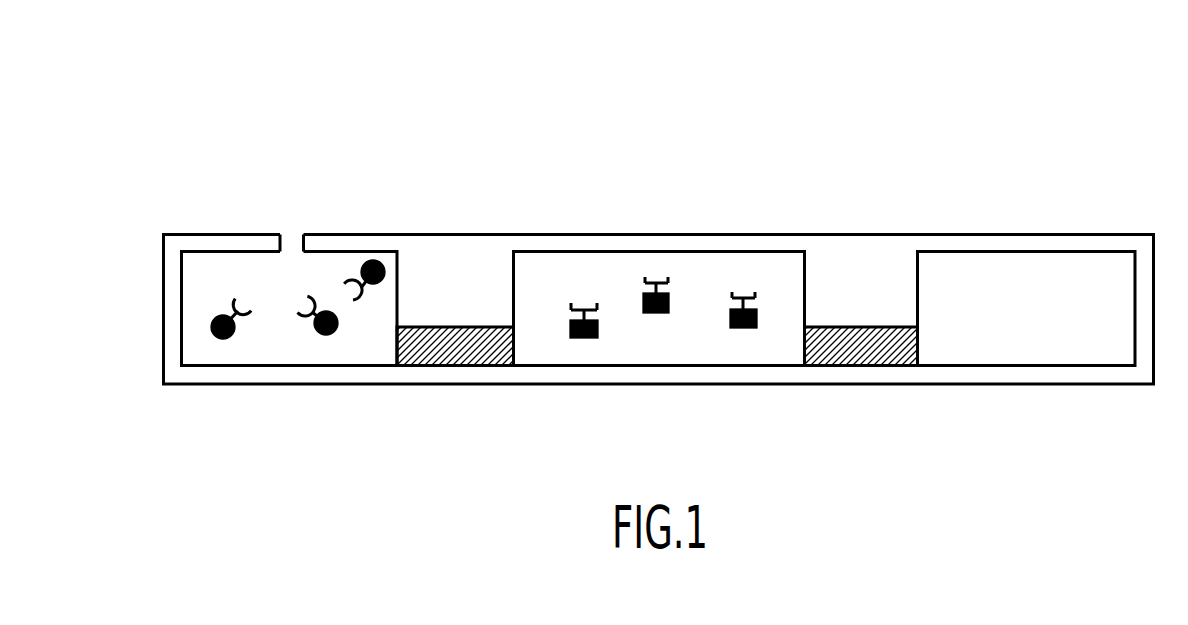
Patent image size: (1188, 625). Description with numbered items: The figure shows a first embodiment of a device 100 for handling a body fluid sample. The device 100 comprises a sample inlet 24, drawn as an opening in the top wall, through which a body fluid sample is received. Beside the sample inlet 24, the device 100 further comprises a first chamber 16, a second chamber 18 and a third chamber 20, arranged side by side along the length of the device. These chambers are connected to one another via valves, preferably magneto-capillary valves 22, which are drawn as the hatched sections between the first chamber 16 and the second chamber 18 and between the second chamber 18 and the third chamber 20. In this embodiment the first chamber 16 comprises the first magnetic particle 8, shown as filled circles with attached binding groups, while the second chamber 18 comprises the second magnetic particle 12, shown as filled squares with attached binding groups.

The device 100 is at (1102, 122).
The sample inlet 24 is at (292, 246).
The first chamber 16 is at (271, 352).
The first magnetic particle 8 is at (372, 260).
The magneto-capillary valve 22 is at (450, 352).
The second chamber 18 is at (549, 352).
The second magnetic particle 12 is at (656, 314).
The third chamber 20 is at (1000, 352).